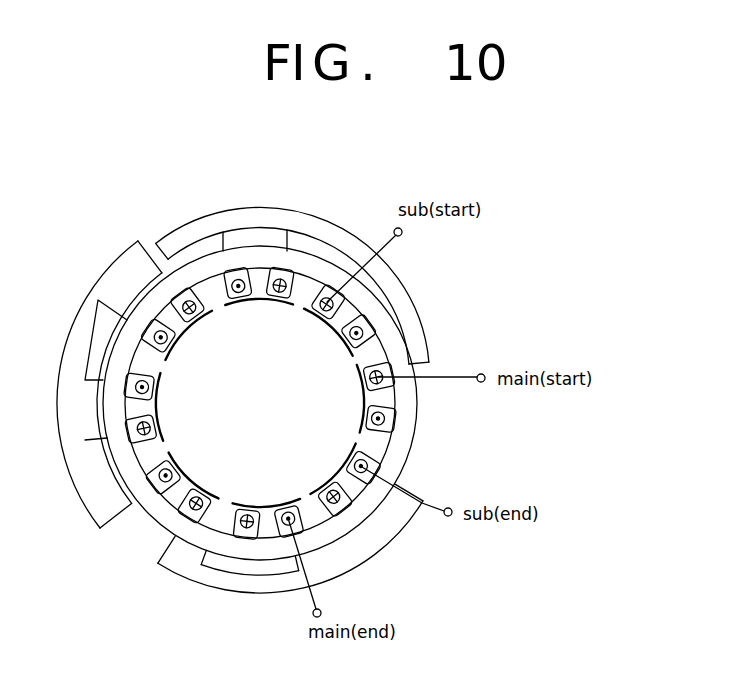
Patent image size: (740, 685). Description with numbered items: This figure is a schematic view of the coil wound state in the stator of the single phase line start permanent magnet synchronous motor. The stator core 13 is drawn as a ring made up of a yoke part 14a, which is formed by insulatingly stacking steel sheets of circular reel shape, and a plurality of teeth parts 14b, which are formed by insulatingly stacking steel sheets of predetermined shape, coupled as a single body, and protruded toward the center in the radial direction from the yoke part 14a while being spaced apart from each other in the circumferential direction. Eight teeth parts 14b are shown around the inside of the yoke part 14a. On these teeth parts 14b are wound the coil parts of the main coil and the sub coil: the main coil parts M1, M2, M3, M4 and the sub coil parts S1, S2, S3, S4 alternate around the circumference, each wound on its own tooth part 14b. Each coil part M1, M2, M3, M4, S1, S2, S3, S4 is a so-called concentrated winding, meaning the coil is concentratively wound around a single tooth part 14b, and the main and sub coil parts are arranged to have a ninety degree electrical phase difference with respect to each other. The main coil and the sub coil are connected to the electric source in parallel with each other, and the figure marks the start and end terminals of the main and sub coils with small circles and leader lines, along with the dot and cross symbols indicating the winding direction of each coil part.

The stator core 13 is at (498, 258).
The yoke part 14a is at (362, 293).
The teeth parts 14b is at (306, 403).
The coil part M1 is at (367, 397).
The coil part M2 is at (258, 298).
The coil part M3 is at (159, 408).
The coil part M4 is at (268, 508).
The coil part S1 is at (340, 320).
The coil part S2 is at (176, 323).
The coil part S3 is at (182, 489).
The coil part S4 is at (345, 481).